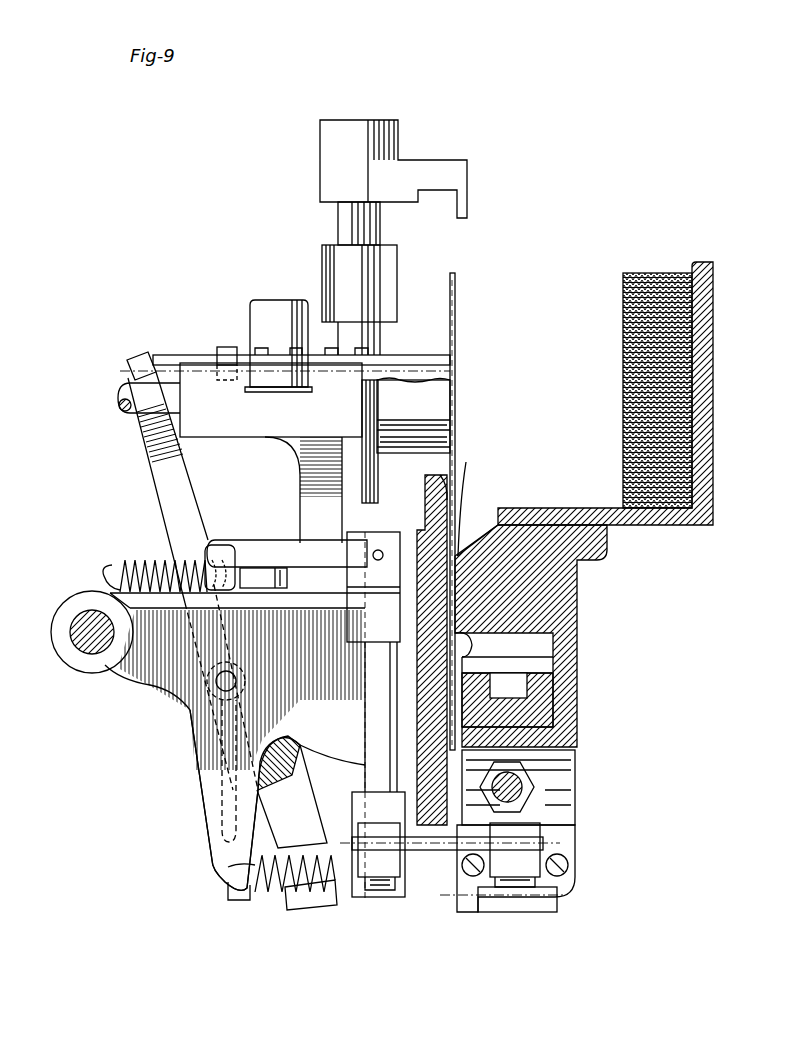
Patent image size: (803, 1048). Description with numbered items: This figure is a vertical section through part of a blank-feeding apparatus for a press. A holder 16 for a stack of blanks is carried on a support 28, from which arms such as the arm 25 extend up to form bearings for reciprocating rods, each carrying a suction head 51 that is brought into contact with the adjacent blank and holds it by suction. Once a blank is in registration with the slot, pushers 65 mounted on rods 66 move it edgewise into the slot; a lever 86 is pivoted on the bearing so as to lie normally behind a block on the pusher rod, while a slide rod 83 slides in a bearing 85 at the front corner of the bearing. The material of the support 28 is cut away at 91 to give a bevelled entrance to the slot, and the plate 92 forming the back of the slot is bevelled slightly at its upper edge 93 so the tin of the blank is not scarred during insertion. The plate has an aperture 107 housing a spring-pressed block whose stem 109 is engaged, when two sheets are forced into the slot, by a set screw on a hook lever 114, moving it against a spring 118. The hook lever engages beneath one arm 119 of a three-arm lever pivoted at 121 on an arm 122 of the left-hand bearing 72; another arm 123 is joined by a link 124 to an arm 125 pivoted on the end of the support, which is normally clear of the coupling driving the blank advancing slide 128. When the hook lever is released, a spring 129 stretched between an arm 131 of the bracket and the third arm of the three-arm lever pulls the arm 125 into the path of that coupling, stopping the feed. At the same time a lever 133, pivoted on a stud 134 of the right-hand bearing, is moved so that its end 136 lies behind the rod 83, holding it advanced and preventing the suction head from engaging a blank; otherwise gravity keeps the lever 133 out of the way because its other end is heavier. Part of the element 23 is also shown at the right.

The holder 16 is at (456, 300).
The bed member 23 is at (700, 264).
The arm 25 is at (230, 400).
The support 28 is at (562, 645).
The suction head 51 is at (435, 395).
The pusher 65 is at (385, 140).
The rod 66 is at (360, 227).
The bearing arm 72 is at (72, 615).
The slide rod 83 is at (190, 357).
The bearing 85 is at (224, 349).
The lever 86 is at (262, 322).
The cut away 91 is at (475, 540).
The plate 92 is at (428, 530).
The upper edge 93 is at (446, 478).
The aperture 107 is at (468, 480).
The stem 109 is at (285, 570).
The hook lever 114 is at (250, 545).
The spring 118 is at (136, 558).
The arm 119 is at (238, 548).
The pivot 121 is at (375, 768).
The arm 122 is at (355, 640).
The arm 123 is at (358, 885).
The link 124 is at (440, 850).
The arm 125 is at (530, 862).
The blank advancing slide 128 is at (545, 702).
The spring 129 is at (268, 892).
The arm 131 is at (215, 845).
The lever 133 is at (180, 522).
The post or stud 134 is at (215, 690).
The end 136 is at (125, 364).